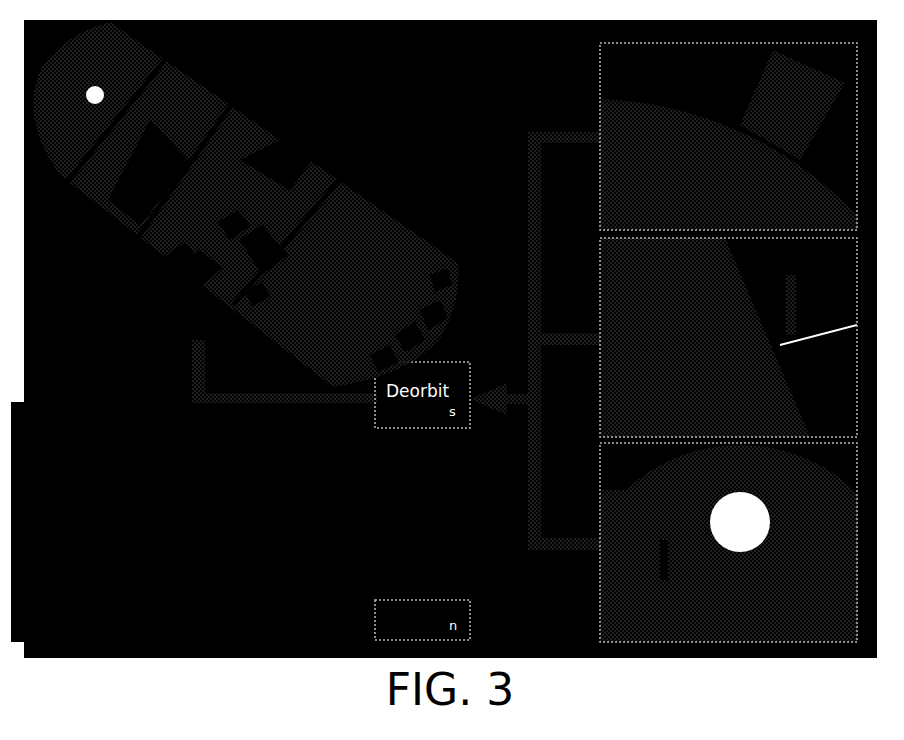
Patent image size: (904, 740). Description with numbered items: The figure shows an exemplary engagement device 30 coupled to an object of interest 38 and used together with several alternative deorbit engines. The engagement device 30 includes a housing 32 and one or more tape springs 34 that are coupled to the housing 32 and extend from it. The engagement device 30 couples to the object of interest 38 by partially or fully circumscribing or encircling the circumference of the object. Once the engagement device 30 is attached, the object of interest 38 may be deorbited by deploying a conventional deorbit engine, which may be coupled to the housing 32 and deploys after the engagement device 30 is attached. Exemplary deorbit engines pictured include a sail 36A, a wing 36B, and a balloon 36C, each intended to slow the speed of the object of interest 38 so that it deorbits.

The engagement device 30 is at (322, 111).
The housing 32 is at (230, 226).
The tape springs 34 is at (160, 287).
The sail 36A is at (726, 98).
The wing 36B is at (742, 299).
The balloon 36C is at (650, 581).
The object of interest 38 is at (251, 310).